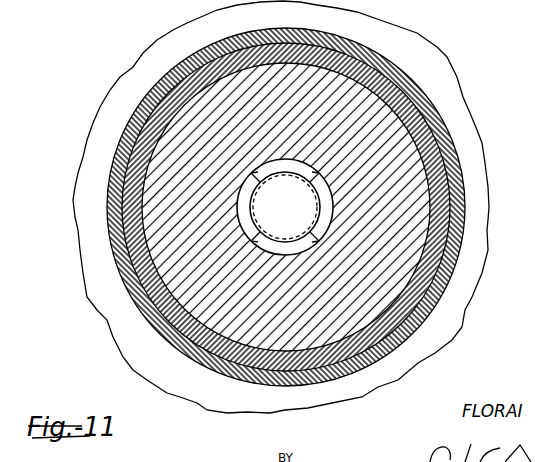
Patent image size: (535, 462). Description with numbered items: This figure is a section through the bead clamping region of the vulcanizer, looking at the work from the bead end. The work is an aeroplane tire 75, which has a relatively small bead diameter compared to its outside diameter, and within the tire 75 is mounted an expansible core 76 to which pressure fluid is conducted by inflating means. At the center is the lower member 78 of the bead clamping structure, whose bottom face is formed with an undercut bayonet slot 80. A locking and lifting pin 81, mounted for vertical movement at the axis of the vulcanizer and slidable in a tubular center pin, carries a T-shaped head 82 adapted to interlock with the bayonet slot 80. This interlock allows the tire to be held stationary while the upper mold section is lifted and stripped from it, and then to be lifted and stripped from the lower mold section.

The aeroplane tire 75 is at (418, 86).
The expansible core 76 is at (462, 165).
The lower member 78 is at (385, 138).
The bayonet slot 80 is at (283, 160).
The locking and lifting pin 81 is at (315, 231).
The T-shaped head 82 is at (320, 183).